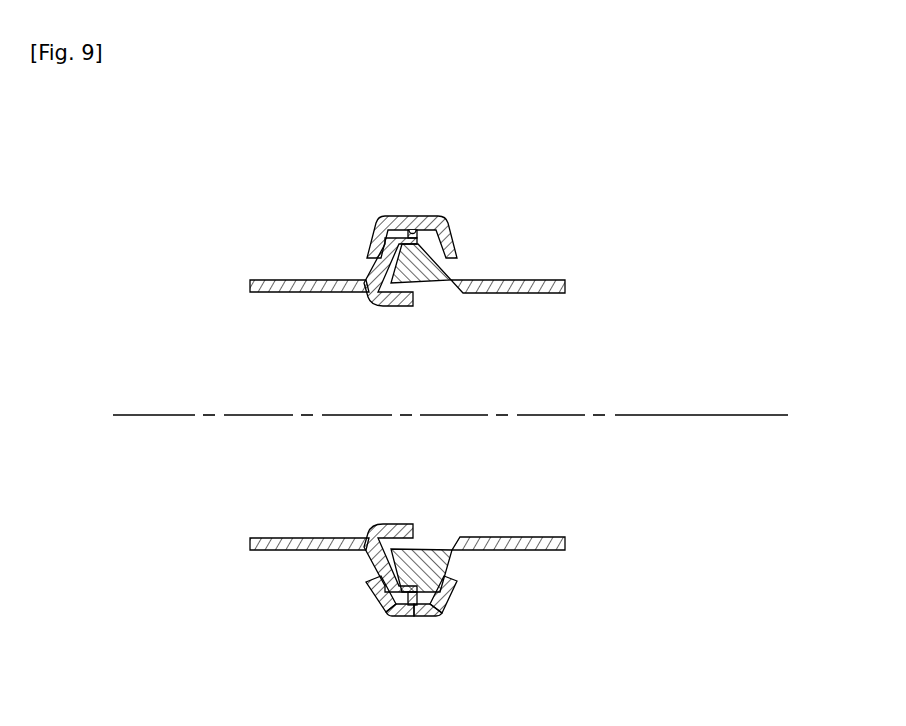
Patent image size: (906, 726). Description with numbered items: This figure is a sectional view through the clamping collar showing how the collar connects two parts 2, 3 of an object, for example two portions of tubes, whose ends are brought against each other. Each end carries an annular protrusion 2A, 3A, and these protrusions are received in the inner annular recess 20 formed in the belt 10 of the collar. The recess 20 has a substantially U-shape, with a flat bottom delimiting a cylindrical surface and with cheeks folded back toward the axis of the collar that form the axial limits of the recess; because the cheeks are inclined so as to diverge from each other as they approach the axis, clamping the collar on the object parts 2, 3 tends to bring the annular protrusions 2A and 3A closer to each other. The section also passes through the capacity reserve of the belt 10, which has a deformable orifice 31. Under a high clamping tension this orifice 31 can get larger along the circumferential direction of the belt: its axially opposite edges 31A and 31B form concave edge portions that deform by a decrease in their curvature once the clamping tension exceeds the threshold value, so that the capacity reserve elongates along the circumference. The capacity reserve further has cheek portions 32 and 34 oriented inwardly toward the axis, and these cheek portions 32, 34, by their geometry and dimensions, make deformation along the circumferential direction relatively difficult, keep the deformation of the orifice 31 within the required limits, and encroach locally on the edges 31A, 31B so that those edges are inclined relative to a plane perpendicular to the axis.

The belt 10 is at (448, 207).
The inner annular recess 20 is at (422, 213).
The object part 2 is at (523, 279).
The annular protrusion 2A is at (457, 257).
The object part 3 is at (290, 552).
The annular protrusion 3A is at (377, 564).
The deformable orifice 31 is at (413, 654).
The edge of the orifice 31A is at (433, 617).
The edge of the orifice 31B is at (394, 617).
The cheek portion 32 is at (455, 600).
The cheek portion 34 is at (372, 598).